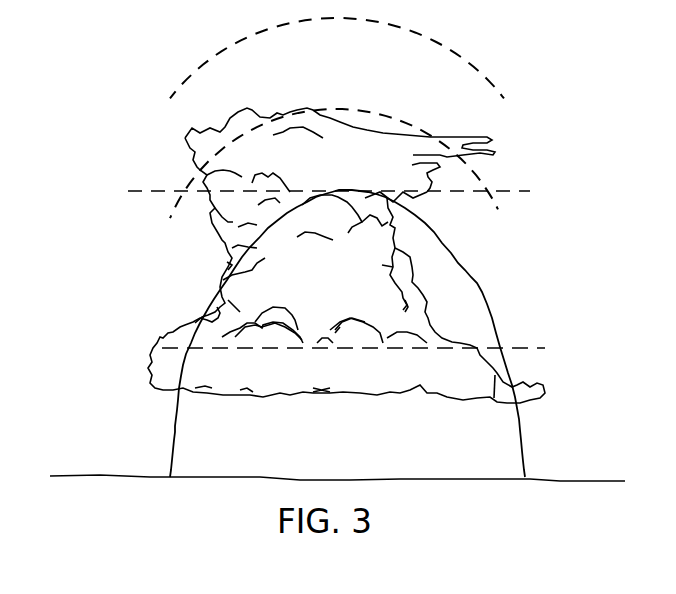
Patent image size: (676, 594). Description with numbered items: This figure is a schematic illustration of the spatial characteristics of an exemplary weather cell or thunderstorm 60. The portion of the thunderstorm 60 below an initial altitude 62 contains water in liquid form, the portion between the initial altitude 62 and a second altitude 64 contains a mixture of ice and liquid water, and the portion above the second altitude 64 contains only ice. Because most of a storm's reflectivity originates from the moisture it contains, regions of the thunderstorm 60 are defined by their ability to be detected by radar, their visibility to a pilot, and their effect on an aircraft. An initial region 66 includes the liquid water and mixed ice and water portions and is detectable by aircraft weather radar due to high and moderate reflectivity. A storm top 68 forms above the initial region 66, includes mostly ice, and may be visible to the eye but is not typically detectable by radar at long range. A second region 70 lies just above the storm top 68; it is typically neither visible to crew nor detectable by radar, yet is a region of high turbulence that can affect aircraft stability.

The thunderstorm 60 is at (186, 330).
The initial altitude 62 is at (520, 347).
The second altitude 64 is at (527, 190).
The initial region 66 is at (482, 288).
The storm top 68 is at (188, 183).
The second region 70 is at (188, 75).